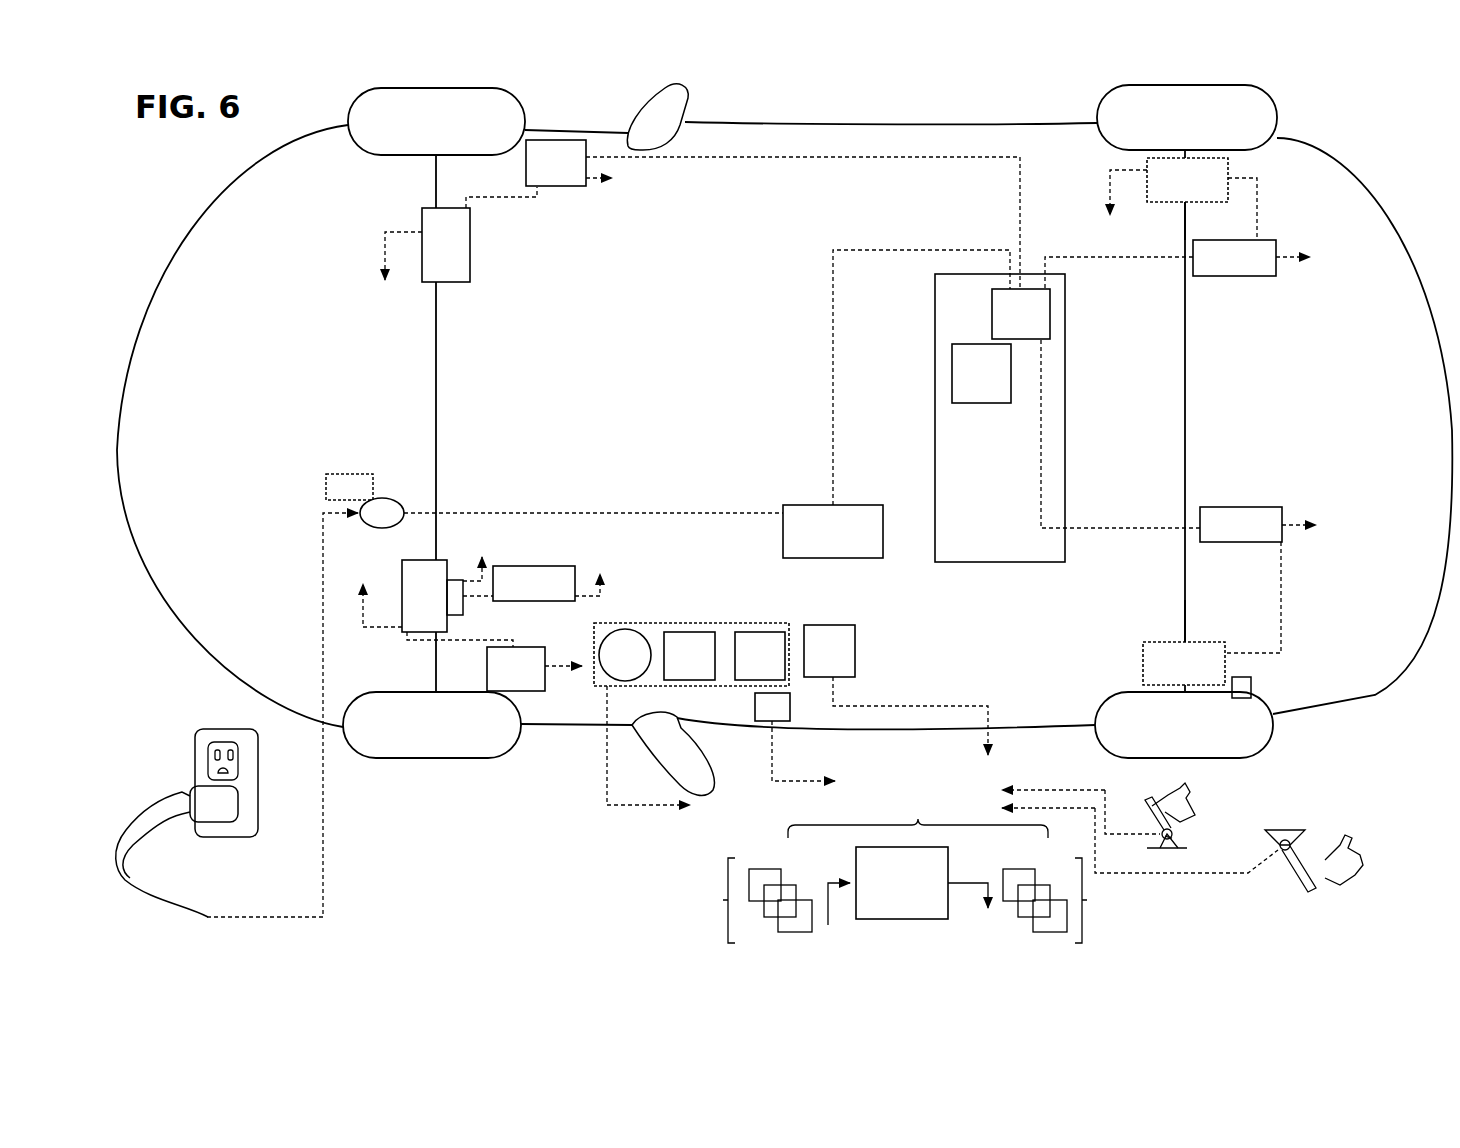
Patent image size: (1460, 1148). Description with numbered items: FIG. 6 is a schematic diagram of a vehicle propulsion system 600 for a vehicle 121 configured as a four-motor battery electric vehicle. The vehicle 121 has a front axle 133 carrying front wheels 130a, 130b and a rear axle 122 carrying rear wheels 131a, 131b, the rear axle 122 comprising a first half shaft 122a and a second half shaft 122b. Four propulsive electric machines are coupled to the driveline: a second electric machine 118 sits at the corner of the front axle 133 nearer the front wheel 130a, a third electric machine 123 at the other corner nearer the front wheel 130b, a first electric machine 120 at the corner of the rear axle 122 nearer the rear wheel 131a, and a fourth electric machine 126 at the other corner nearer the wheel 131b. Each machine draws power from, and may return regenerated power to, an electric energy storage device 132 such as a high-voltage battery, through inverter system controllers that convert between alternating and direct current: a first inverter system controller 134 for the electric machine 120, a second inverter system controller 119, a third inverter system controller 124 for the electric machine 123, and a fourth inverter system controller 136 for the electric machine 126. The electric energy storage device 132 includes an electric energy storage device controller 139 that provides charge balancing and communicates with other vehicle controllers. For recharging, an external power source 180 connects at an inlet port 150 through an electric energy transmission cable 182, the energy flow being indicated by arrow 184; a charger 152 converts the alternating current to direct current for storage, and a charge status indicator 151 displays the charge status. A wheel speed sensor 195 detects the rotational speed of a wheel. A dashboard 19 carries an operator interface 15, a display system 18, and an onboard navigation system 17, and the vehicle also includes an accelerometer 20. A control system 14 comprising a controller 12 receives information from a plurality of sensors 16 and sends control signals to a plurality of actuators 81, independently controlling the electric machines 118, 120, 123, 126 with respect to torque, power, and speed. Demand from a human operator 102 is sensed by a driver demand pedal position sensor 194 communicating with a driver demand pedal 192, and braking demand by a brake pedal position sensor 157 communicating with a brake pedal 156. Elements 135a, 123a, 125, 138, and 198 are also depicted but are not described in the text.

The vehicle propulsion system 600 is at (925, 100).
The vehicle 121 is at (1390, 717).
The front wheel 130a is at (444, 90).
The rear wheel 131a is at (1222, 86).
The front wheel 130b is at (424, 758).
The rear wheel 131b is at (1224, 758).
The front axle 133 is at (436, 382).
The rear axle 122 is at (1188, 358).
The first half shaft 122a is at (1187, 236).
The second half shaft 122b is at (1186, 628).
The second electric machine 118 is at (421, 267).
The second inverter system controller 119 is at (773, 214).
The connection 135a is at (504, 205).
The first electric machine 120 is at (1177, 199).
The first inverter system controller 134 is at (1193, 264).
The fourth inverter system controller 136 is at (1191, 496).
The fourth electric machine 126 is at (1184, 663).
The wheel speed sensor 195 is at (1241, 677).
The electric energy storage device 132 is at (1000, 418).
The battery controller 138 is at (1021, 314).
The electric energy storage device controller 139 is at (981, 373).
The charger 152 is at (896, 404).
The charge status indicator 151 is at (349, 487).
The inlet port 150 is at (383, 498).
The arrow 184 is at (255, 917).
The power source 180 is at (195, 758).
The electric energy transmission cable 182 is at (124, 824).
The third electric machine 123 is at (432, 592).
The transmission component 123a is at (462, 612).
The controller unit 125 is at (556, 572).
The third inverter system controller 124 is at (539, 684).
The dashboard 19 is at (725, 622).
The operator interface 15 is at (625, 655).
The display system 18 is at (689, 656).
The onboard navigation system 17 is at (760, 656).
The sensor 198 is at (896, 690).
The accelerometer 20 is at (795, 737).
The control system 14 is at (946, 806).
The controller 12 is at (908, 886).
The sensors 16 is at (730, 900).
The actuators 81 is at (1094, 900).
The driver demand pedal 192 is at (1145, 817).
The driver demand pedal position sensor 194 is at (1178, 834).
The human operator 102 is at (1264, 826).
The brake pedal position sensor 157 is at (1280, 843).
The brake pedal 156 is at (1304, 893).